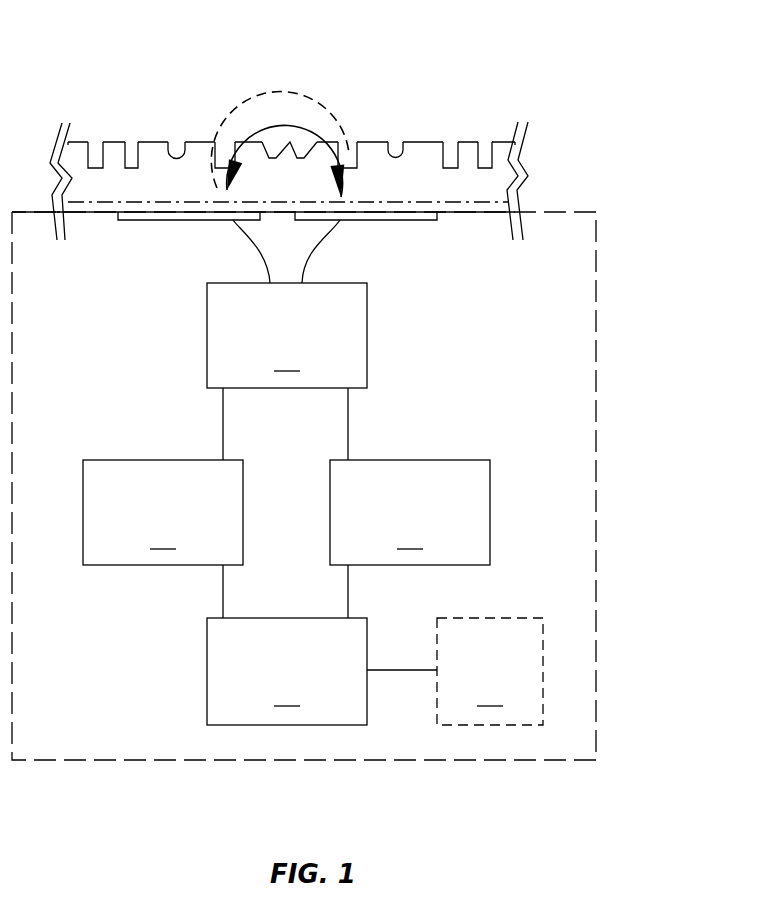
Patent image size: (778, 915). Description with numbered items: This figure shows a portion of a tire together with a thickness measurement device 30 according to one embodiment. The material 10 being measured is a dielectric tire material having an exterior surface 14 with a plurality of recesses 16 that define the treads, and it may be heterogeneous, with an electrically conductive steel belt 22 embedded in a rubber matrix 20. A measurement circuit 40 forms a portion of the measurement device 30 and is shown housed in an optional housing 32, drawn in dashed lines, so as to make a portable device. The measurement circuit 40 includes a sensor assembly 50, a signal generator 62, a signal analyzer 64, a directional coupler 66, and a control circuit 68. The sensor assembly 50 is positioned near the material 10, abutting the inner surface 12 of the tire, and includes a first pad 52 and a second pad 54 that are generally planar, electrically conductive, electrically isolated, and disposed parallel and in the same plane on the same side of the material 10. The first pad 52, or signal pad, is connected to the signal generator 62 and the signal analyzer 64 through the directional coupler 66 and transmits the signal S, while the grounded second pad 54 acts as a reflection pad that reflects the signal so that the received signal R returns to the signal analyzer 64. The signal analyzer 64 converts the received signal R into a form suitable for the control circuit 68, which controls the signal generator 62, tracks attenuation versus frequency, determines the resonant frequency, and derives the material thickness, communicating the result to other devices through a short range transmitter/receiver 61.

The material 10 is at (421, 153).
The inner surface 12 is at (463, 215).
The exterior surface 14 is at (152, 142).
The recesses 16 is at (90, 124).
The rubber matrix 20 is at (478, 183).
The steel belt 22 is at (477, 202).
The measurement device 30 is at (648, 492).
The housing 32 is at (597, 298).
The measurement circuit 40 is at (410, 338).
The sensor assembly 50 is at (392, 247).
The first pad 52 is at (142, 218).
The second pad 54 is at (400, 220).
The transmitter/receiver 61 is at (490, 671).
The signal generator 62 is at (163, 512).
The signal analyzer 64 is at (410, 512).
The directional coupler 66 is at (287, 335).
The control circuit 68 is at (287, 671).
The received signal R is at (270, 124).
The signal S is at (299, 113).